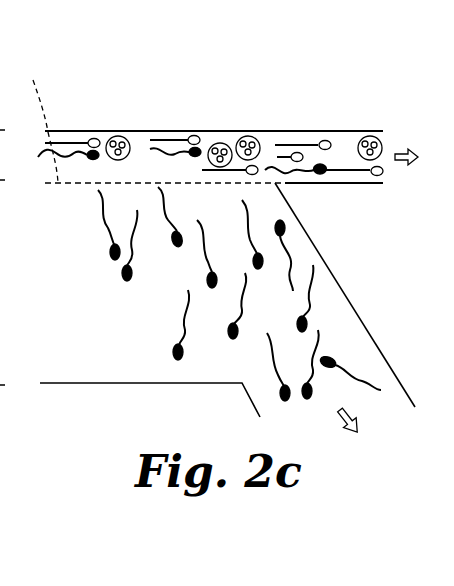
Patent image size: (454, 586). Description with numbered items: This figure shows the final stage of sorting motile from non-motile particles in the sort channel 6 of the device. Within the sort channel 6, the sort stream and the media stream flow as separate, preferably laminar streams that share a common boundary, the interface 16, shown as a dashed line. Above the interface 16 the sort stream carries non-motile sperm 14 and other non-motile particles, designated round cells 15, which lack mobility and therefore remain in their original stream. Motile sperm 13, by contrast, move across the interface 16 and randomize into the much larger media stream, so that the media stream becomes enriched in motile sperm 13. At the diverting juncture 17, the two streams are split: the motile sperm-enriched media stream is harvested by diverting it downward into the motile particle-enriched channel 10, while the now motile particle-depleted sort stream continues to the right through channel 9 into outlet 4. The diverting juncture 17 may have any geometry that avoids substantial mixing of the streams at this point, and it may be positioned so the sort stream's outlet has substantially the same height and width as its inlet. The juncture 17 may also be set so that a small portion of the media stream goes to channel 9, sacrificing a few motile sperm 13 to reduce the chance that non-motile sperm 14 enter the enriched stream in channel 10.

The interface 16 is at (45, 123).
The non-motile sperm 14 is at (95, 138).
The round cells 15 is at (222, 142).
The channel 9 is at (312, 159).
The outlet 4 is at (413, 158).
The diverting juncture 17 is at (299, 196).
The motile sperm 13 is at (172, 352).
The sort channel 6 is at (89, 347).
The motile particle-enriched channel 10 is at (352, 433).